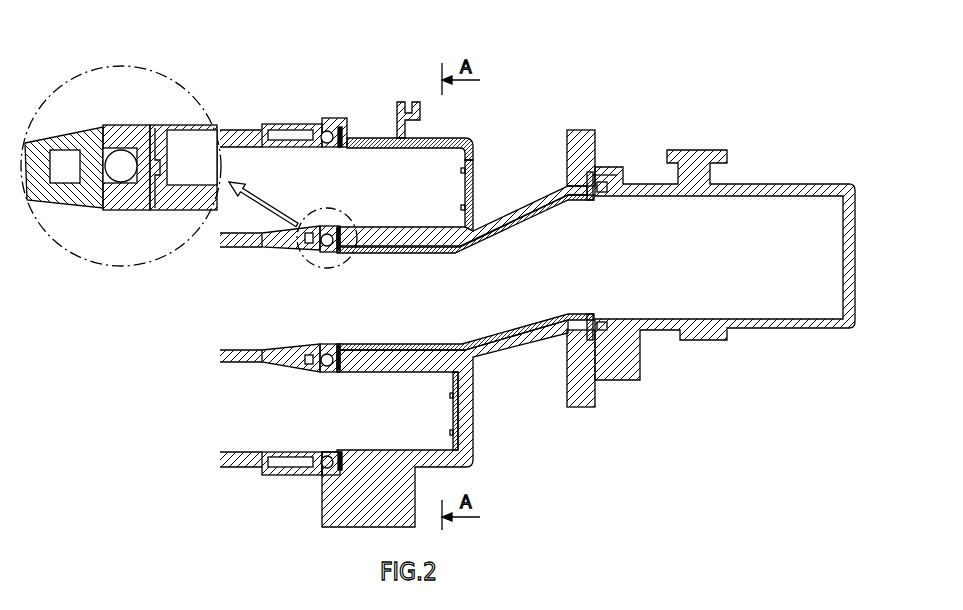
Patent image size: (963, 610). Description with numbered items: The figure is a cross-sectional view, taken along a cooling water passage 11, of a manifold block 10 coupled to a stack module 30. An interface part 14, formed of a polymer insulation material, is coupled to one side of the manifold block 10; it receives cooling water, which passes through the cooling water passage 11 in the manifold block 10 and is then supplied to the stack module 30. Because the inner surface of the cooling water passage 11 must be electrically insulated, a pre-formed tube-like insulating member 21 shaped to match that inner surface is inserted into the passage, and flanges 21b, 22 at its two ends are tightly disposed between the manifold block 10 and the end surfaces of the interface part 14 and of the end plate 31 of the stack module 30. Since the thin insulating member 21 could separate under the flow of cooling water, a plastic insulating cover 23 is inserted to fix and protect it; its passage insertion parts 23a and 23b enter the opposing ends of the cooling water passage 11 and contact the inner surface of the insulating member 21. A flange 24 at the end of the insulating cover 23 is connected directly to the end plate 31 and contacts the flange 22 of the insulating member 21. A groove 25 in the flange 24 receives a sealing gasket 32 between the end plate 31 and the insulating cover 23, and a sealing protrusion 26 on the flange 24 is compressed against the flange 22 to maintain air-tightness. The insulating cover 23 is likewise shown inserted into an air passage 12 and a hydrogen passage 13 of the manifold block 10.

The manifold block 10 is at (382, 267).
The cooling water passage 11 is at (465, 395).
The air passage 12 is at (473, 160).
The hydrogen passage 13 is at (468, 412).
The interface part 14 is at (797, 190).
The insulating member 21 is at (540, 192).
The flange 21b is at (600, 337).
The flange 22 is at (150, 207).
The insulating cover 23 is at (440, 250).
The passage insertion part 23a is at (477, 197).
The passage insertion part 23b is at (447, 447).
The flange 24 is at (132, 128).
The groove 25 is at (90, 210).
The sealing protrusion 26 is at (182, 133).
The stack module 30 is at (243, 128).
The end plate 31 is at (292, 120).
The sealing gasket 32 is at (325, 127).